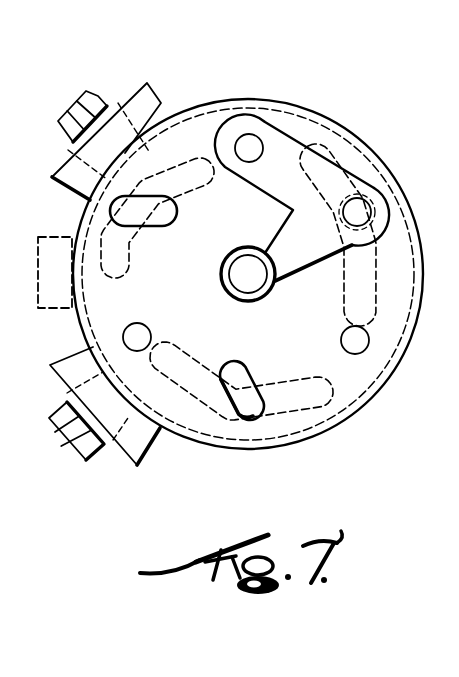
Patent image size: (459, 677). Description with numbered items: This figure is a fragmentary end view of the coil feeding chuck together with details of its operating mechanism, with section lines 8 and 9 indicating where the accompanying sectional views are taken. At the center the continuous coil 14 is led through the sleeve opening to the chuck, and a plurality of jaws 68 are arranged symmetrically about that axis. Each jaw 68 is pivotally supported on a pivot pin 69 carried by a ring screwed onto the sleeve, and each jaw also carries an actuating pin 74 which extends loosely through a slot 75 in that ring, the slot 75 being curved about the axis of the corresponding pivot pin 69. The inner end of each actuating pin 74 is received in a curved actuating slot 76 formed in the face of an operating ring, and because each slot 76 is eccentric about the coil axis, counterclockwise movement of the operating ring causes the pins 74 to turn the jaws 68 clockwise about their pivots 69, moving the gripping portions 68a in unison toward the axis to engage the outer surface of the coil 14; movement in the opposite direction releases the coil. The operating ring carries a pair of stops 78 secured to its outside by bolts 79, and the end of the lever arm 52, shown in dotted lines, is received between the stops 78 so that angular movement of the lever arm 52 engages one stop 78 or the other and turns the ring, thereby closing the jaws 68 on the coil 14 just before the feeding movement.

The section line 8- 8 is at (247, 487).
The section line 9- 9 is at (67, 43).
The continuous coil 14 is at (222, 278).
The lever arm 52 is at (38, 308).
The jaw 68 is at (279, 167).
The gripping portion 68a is at (295, 260).
The pivot pin 69 is at (253, 146).
The actuating pin 74 is at (367, 210).
The slot 75 is at (362, 230).
The curved actuating slot 76 is at (343, 158).
The stop 78 is at (137, 93).
The bolt 79 is at (86, 94).